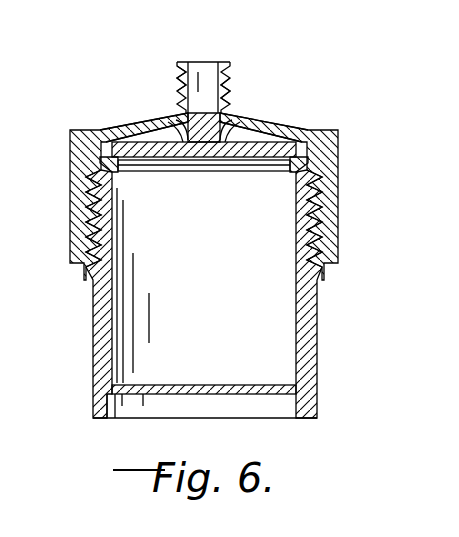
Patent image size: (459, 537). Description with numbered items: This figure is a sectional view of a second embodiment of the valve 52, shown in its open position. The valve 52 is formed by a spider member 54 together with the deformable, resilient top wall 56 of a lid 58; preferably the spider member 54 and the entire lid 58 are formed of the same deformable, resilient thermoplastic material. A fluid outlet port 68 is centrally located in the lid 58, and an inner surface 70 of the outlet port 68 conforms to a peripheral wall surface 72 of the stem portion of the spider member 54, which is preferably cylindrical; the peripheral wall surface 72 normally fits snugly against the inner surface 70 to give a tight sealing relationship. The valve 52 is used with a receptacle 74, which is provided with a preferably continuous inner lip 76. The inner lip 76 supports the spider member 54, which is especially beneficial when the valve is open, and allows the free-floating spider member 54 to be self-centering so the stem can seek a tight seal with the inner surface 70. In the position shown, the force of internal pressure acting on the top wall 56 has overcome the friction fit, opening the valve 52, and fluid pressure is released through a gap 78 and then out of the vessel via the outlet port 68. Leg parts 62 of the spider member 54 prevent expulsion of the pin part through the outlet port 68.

The valve 52 is at (313, 124).
The spider member 54 is at (186, 160).
The top wall 56 is at (145, 130).
The lid 58 is at (343, 212).
The leg parts 62 is at (235, 158).
The fluid outlet port 68 is at (216, 61).
The inner surface 70 is at (212, 104).
The peripheral wall surface 72 is at (186, 136).
The receptacle 74 is at (322, 345).
The inner lip 76 is at (113, 172).
The gap 78 is at (185, 105).